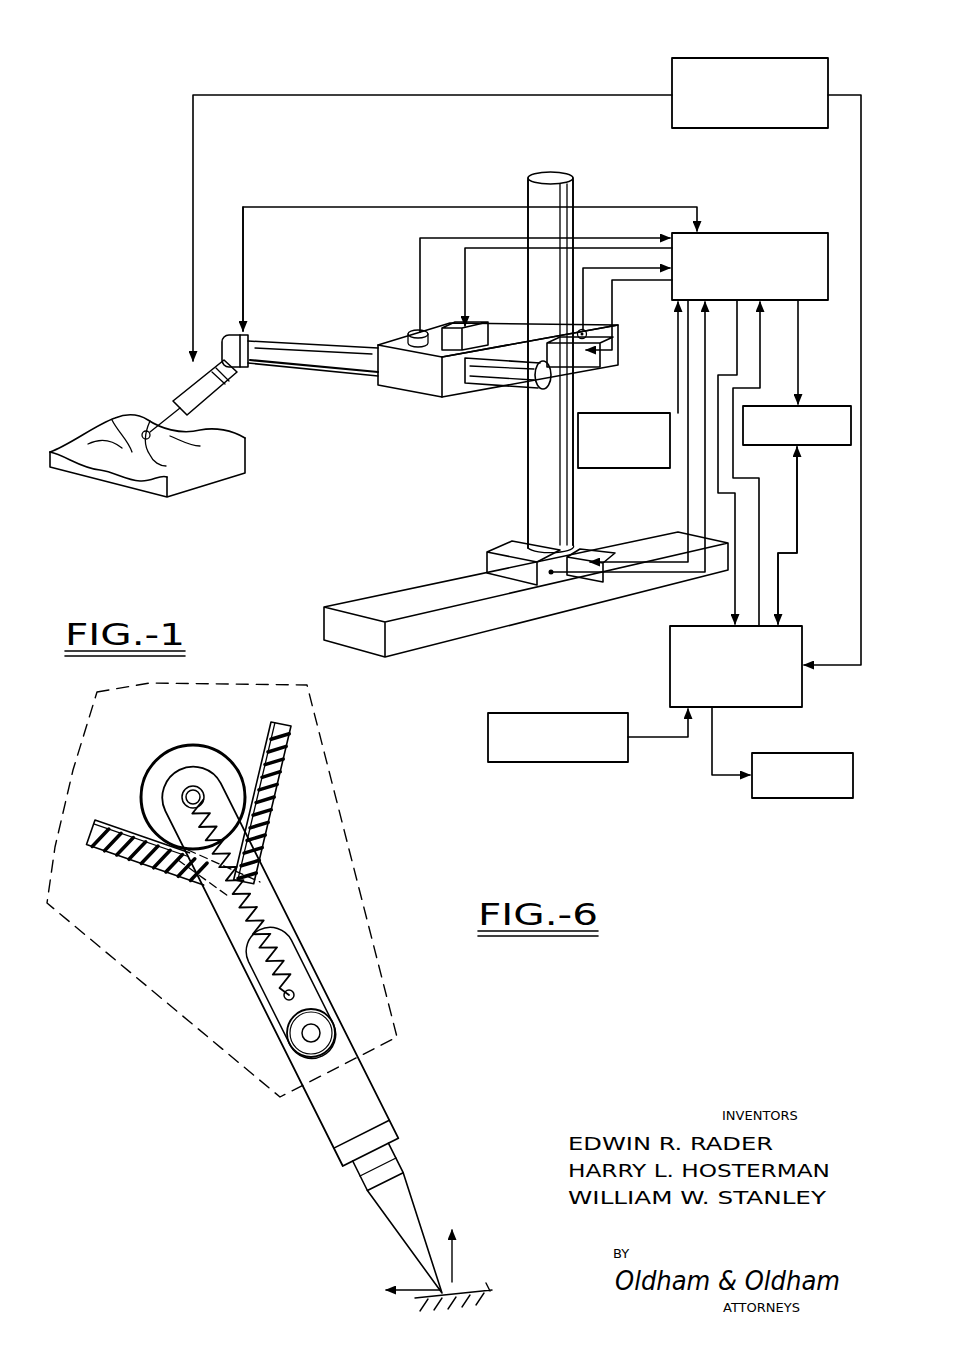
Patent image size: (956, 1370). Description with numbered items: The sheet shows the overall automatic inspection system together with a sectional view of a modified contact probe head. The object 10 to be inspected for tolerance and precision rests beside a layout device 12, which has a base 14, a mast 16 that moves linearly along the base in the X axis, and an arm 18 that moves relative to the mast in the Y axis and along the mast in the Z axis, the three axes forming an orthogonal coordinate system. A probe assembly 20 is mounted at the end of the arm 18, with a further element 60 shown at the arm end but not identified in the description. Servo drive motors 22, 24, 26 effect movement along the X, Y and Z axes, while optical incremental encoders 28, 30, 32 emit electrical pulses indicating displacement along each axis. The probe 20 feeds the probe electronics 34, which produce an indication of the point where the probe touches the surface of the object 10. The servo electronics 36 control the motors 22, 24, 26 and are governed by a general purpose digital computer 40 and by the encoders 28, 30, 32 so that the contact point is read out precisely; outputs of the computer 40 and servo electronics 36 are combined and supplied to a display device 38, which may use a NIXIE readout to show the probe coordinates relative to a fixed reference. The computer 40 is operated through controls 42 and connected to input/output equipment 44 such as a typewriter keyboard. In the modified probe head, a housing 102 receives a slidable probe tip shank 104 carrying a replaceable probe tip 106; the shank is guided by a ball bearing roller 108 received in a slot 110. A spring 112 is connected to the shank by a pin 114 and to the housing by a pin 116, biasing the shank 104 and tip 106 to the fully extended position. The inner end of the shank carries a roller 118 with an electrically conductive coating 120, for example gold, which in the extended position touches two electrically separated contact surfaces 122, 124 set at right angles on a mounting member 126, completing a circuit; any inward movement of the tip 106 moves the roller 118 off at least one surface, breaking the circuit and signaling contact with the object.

In FIG. 1, the object 10 is at (82, 419).
In FIG. 1, the layout device 12 is at (496, 182).
In FIG. 1, the base 14 is at (428, 590).
In FIG. 1, the mast 16 is at (530, 416).
In FIG. 1, the arm 18 is at (324, 368).
In FIG. 1, the probe assembly 20 is at (190, 380).
In FIG. 1, the servo drive motor 22 is at (506, 548).
In FIG. 1, the servo drive motor 24 is at (410, 336).
In FIG. 1, the servo drive motor 26 is at (590, 368).
In FIG. 1, the optical incremental encoder 28 is at (572, 548).
In FIG. 1, the optical incremental encoder 30 is at (474, 323).
In FIG. 1, the optical incremental encoder 32 is at (585, 330).
In FIG. 1, the probe electronics 34 is at (672, 74).
In FIG. 1, the servo electronics 36 is at (790, 234).
In FIG. 1, the display device 38 is at (848, 408).
In FIG. 1, the general purpose digital computer 40 is at (670, 660).
In FIG. 1, the controls 42 is at (615, 713).
In FIG. 1, the input/output equipment 44 is at (805, 753).
In FIG. 1, the probe collar 60 is at (232, 362).
In FIG. 6, the housing 102 is at (330, 803).
In FIG. 6, the probe tip shank 104 is at (371, 1096).
In FIG. 6, the replaceable probe tip 106 is at (422, 1240).
In FIG. 6, the ball bearing roller 108 is at (335, 1032).
In FIG. 6, the slot 110 is at (305, 968).
In FIG. 6, the spring 112 is at (282, 889).
In FIG. 6, the pin 114 is at (192, 788).
In FIG. 6, the pin 116 is at (283, 996).
In FIG. 6, the roller 118 is at (178, 752).
In FIG. 6, the electrically conductive coating 120 is at (145, 782).
In FIG. 6, the contact surface 122 is at (270, 742).
In FIG. 6, the contact surface 124 is at (112, 824).
In FIG. 6, the mounting member 126 is at (262, 838).